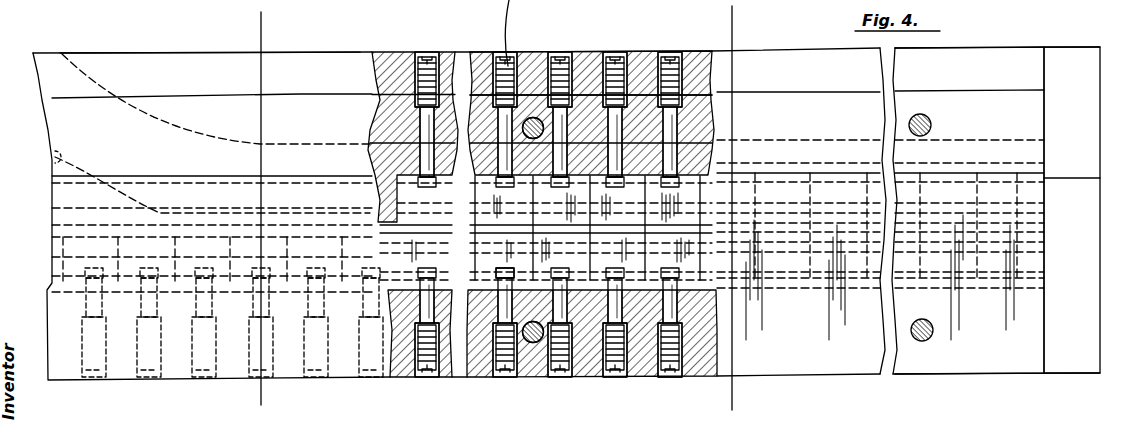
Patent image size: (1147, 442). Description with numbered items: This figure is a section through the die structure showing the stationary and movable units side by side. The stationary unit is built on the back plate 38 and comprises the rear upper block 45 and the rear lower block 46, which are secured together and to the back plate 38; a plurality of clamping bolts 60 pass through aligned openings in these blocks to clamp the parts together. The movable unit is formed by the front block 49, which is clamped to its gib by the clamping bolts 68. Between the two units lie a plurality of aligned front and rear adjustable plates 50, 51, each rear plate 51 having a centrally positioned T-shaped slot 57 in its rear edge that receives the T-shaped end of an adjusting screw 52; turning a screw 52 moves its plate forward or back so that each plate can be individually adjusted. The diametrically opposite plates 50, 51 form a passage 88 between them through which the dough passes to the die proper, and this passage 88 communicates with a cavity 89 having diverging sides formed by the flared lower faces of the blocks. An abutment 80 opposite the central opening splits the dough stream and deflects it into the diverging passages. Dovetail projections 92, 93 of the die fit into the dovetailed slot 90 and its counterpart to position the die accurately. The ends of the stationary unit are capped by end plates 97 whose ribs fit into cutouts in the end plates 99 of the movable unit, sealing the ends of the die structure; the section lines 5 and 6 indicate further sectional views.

The back plate 38 is at (197, 54).
The abutment 80 is at (48, 153).
The section line 5 is at (262, 212).
The section line 6 is at (733, 209).
The rear adjustable plates 51 is at (479, 51).
The T-shaped slot 57 is at (512, 182).
The rear lower block 46 is at (587, 73).
The clamping bolts 60 is at (906, 126).
The rear upper block 45 is at (997, 102).
The end plates 97 is at (1097, 108).
The end plates 99 is at (1097, 272).
The front adjustable plates 50 is at (487, 270).
The adjusting screws 52 is at (513, 369).
The front block 49 is at (645, 378).
The passage 88 is at (708, 233).
The clamping bolts 68 is at (922, 342).
The dovetail projection 92 is at (94, 6).
The dovetailed slot 90 is at (140, 6).
The cavity 89 is at (192, 6).
The dovetail projection 93 is at (305, 6).